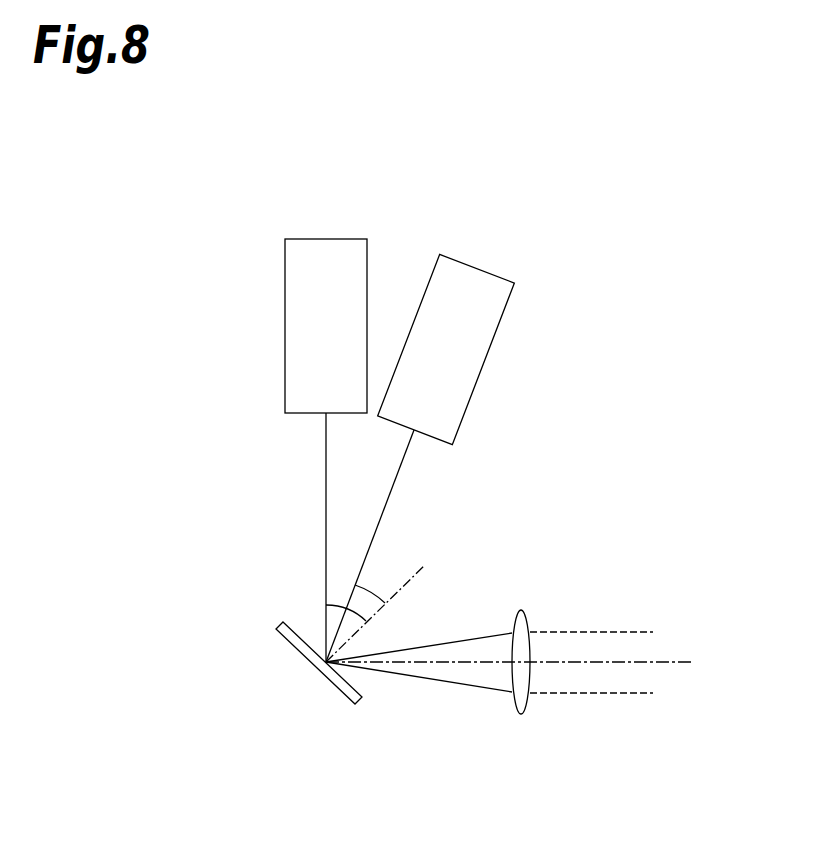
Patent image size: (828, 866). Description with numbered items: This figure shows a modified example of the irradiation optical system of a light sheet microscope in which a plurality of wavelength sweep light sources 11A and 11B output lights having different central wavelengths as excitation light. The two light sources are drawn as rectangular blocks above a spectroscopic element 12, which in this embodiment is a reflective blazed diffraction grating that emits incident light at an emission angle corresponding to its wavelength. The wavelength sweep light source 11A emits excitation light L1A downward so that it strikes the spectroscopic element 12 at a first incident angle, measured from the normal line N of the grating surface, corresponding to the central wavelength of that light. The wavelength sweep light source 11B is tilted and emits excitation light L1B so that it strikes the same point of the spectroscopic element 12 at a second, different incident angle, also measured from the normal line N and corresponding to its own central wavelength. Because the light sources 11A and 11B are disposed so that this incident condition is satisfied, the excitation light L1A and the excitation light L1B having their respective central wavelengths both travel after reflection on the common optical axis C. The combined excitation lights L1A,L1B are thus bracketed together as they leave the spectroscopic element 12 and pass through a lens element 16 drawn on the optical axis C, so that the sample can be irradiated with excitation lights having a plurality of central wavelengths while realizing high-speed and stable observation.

The wavelength sweep light source 11A is at (326, 239).
The wavelength sweep light source 11B is at (483, 271).
The spectroscopic element 12 is at (336, 687).
The lens 16 is at (521, 610).
The excitation light L1A is at (326, 475).
The excitation light L1B is at (397, 477).
The normal line N is at (425, 565).
The optical axis C is at (681, 662).
The excitation lights L1A,L1B is at (462, 641).